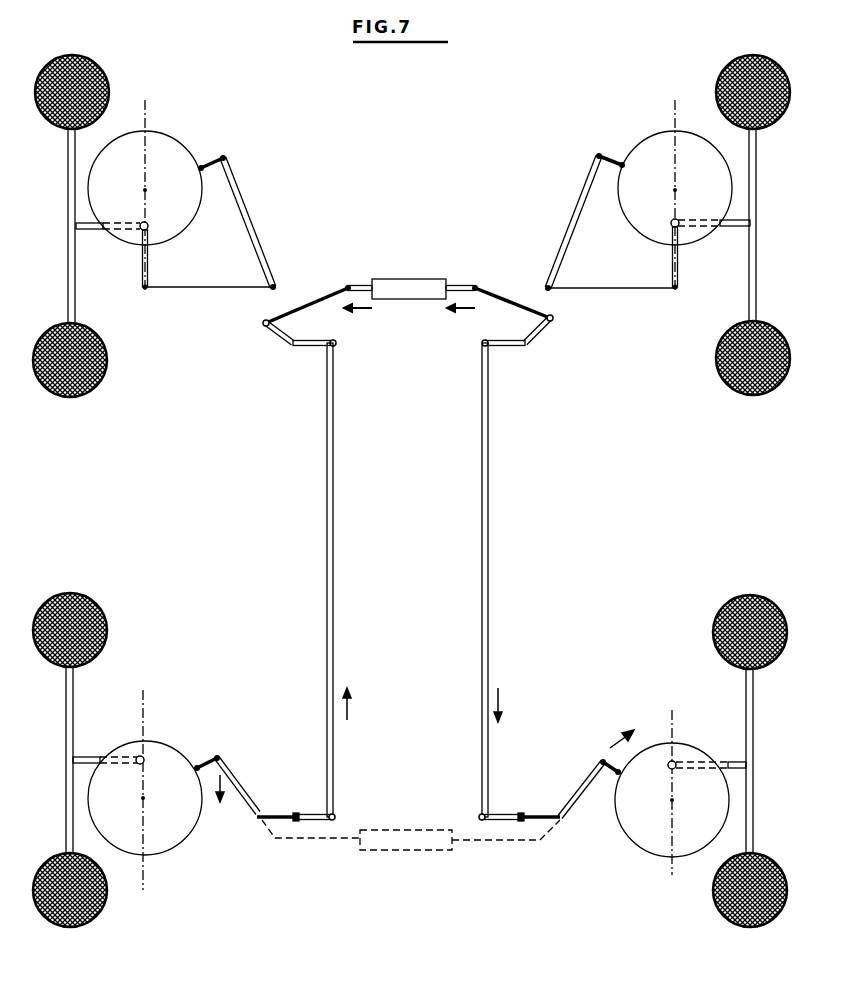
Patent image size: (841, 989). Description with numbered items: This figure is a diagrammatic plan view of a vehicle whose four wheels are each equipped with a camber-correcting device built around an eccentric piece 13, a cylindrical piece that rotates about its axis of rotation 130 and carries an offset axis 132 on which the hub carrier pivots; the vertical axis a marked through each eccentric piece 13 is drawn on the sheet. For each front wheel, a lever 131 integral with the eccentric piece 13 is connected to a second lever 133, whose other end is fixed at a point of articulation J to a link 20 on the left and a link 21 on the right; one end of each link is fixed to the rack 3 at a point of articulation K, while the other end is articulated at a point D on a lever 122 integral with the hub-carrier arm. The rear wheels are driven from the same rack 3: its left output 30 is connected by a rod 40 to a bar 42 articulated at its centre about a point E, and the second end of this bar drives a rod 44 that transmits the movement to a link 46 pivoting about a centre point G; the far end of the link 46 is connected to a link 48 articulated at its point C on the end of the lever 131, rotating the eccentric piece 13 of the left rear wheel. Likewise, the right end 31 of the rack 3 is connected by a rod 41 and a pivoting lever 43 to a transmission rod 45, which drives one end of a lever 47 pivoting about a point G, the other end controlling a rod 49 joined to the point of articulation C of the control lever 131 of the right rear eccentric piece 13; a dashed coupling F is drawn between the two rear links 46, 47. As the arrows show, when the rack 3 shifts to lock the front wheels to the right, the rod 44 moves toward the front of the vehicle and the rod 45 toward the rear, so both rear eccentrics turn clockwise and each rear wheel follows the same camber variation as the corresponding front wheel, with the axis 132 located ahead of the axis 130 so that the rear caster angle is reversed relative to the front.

The rack 3 is at (412, 279).
The eccentric piece 13 is at (172, 150).
The link 20 is at (205, 290).
The front right steering rod 21 is at (610, 290).
The left output of the rack 30 is at (365, 285).
The right end of the rack 31 is at (458, 286).
The rod 40 is at (318, 300).
The rod 41 is at (503, 300).
The bar 42 is at (308, 346).
The pivoting lever 43 is at (545, 330).
The rod 44 is at (334, 580).
The transmission rod 45 is at (482, 590).
The link 46 is at (262, 822).
The lever 47 is at (498, 820).
The link 48 is at (245, 786).
The rod 49 is at (583, 790).
The lever 122 is at (148, 268).
The axis of rotation 130 is at (143, 189).
The lever 131 is at (206, 766).
The offset axis 132 is at (148, 226).
The second lever 133 is at (255, 212).
The pivot axis a is at (407, 391).
The point of articulation C is at (225, 160).
The point of articulation D is at (145, 290).
The point E is at (287, 348).
The rear coupling F is at (411, 827).
The centre point G is at (297, 814).
The point of articulation J is at (278, 286).
The point of articulation K is at (347, 286).